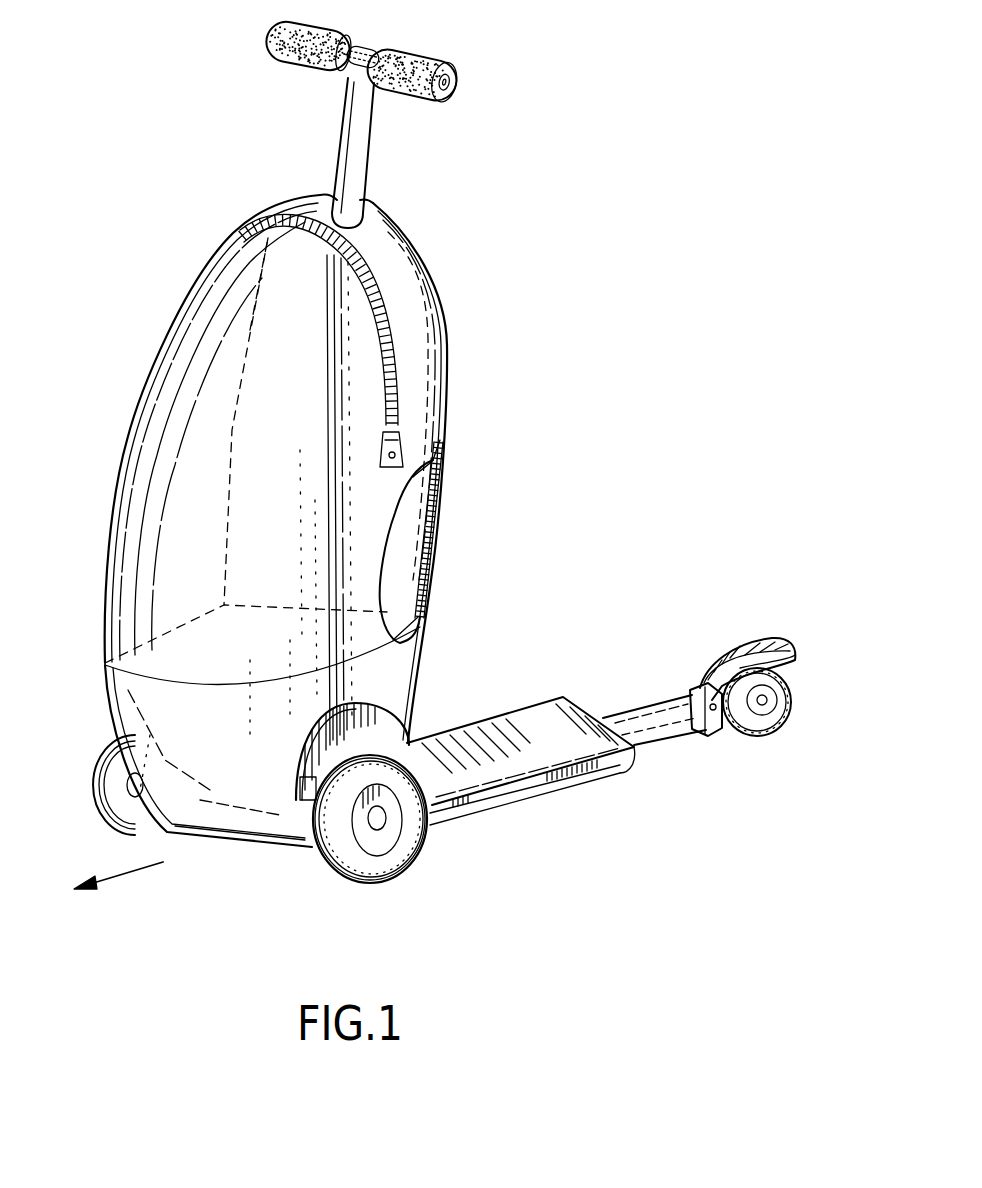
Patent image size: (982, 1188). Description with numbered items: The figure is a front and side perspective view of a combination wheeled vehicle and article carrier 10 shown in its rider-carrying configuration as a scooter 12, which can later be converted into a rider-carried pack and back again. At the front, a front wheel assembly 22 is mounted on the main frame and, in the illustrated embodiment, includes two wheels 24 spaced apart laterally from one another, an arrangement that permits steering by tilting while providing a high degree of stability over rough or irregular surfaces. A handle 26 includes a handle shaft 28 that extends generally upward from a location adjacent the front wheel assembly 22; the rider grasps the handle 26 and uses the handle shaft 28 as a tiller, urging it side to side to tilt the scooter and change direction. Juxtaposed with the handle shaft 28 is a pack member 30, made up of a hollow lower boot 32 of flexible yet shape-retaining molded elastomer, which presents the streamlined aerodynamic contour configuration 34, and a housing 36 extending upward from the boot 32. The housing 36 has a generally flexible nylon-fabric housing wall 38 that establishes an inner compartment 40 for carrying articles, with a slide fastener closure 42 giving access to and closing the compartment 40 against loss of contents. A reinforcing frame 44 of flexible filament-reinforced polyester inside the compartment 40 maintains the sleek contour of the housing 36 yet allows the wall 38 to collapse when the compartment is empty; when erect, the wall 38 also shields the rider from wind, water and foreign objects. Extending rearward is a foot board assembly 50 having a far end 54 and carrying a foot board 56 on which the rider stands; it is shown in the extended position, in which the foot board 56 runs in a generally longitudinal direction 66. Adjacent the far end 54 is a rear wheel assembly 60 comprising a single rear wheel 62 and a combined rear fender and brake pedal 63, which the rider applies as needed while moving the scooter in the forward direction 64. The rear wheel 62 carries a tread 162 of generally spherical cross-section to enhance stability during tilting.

The combination wheeled vehicle and article carrier 10 is at (213, 228).
The scooter 12 is at (452, 727).
The front wheel assembly 22 is at (367, 886).
The wheels 24 is at (105, 812).
The handle 26 is at (432, 44).
The handle shaft 28 is at (368, 160).
The pack member 30 is at (165, 462).
The lower boot 32 is at (243, 838).
The streamlined aerodynamic contour configuration 34 is at (132, 692).
The housing 36 is at (132, 548).
The housing wall 38 is at (435, 475).
The inner compartment 40 is at (393, 585).
The slide fastener closure 42 is at (365, 263).
The reinforcing frame 44 is at (250, 330).
The foot board assembly 50 is at (552, 700).
The far end 54 is at (797, 644).
The foot board 56 is at (551, 763).
The rear wheel assembly 60 is at (761, 748).
The rear wheel 62 is at (788, 682).
The combined rear fender and brake pedal 63 is at (757, 643).
The forward direction 64 is at (133, 875).
The longitudinal direction 66 is at (600, 722).
The tread 162 is at (790, 727).